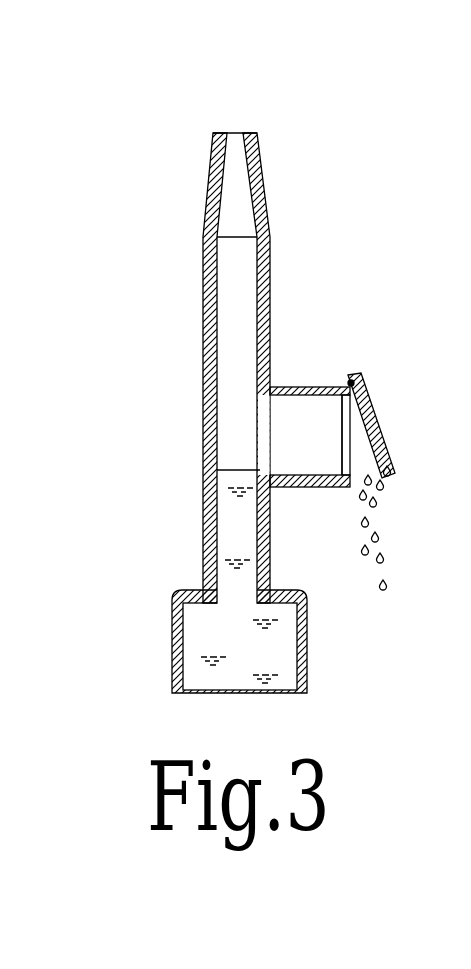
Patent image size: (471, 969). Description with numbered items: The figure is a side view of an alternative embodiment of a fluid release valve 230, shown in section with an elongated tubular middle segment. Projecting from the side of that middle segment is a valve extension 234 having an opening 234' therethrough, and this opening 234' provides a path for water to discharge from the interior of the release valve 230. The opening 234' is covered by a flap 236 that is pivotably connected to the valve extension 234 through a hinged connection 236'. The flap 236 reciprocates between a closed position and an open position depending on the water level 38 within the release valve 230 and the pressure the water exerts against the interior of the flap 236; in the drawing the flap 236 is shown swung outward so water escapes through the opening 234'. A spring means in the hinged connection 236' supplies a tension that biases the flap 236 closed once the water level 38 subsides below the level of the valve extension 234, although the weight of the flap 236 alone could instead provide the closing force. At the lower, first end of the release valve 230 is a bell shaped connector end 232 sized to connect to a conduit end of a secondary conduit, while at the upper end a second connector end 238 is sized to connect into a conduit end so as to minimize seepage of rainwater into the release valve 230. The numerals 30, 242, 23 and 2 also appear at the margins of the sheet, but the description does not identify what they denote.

The fluid release valve 230 is at (310, 124).
The bell shaped connector end 232 is at (172, 648).
The valve extension 234 is at (310, 391).
The opening 234' is at (312, 473).
The flap 236 is at (405, 397).
The hinged connection 236' is at (386, 329).
The second connector end 238 is at (210, 182).
The water level 38 is at (237, 470).
The liquid droplets 30 is at (378, 534).
The element 242 is at (470, 632).
The element 23 (cut off) 23 is at (380, 442).
The element 2 (cut off) 2 is at (464, 84).